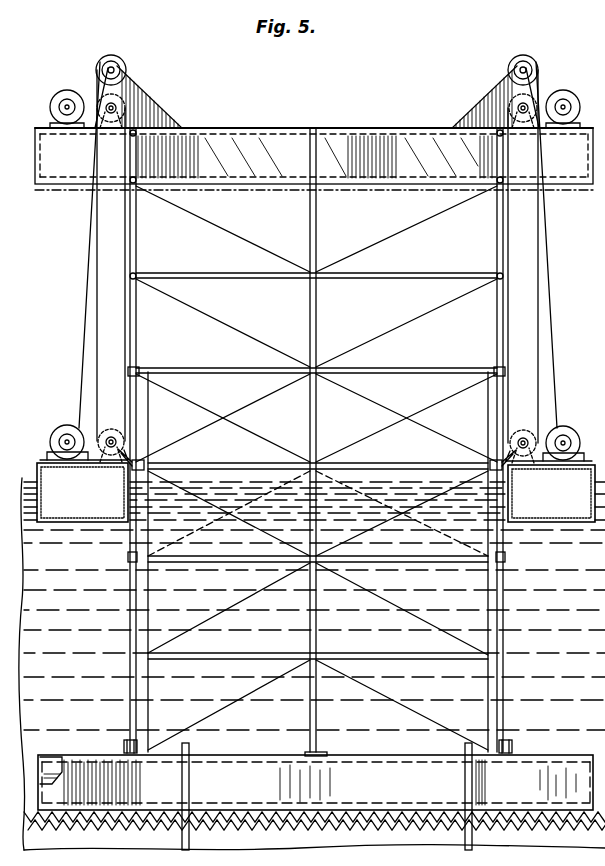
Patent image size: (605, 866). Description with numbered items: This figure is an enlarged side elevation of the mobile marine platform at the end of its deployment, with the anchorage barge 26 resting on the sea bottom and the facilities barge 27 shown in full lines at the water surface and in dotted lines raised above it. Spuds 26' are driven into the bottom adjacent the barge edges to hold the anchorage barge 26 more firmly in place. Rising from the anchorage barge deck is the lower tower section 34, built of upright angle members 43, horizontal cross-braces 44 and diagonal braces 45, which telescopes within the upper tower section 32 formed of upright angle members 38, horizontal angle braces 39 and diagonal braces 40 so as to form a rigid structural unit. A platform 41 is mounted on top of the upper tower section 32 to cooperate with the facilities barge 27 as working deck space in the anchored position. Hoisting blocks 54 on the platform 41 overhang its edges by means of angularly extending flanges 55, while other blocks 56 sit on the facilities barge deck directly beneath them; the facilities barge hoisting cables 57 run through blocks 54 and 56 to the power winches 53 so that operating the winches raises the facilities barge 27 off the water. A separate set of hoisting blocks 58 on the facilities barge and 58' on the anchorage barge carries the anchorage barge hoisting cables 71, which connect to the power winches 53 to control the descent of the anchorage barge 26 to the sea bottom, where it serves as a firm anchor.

The anchorage barge 26 is at (313, 772).
The spuds 26' is at (309, 796).
The facilities barge 27 is at (41, 191).
The upper tower section 32 is at (131, 292).
The lower tower section 34 is at (490, 601).
The upright angle members 38 is at (138, 336).
The horizontal angle braces 39 is at (179, 272).
The diagonal braces 40 is at (216, 319).
The platform 41 is at (298, 127).
The upright angle members 43 is at (137, 633).
The horizontal cross-braces 44 is at (181, 564).
The diagonal braces 45 is at (214, 621).
The power winches 53 is at (58, 94).
The hoisting blocks 54 is at (112, 57).
The angularly extending flanges 55 is at (139, 86).
The blocks 56 is at (100, 99).
The facilities barge hoisting cables 57 is at (88, 260).
The hoisting blocks 58 is at (317, 443).
The hoisting blocks 58' is at (315, 745).
The anchorage barge hoisting cables 71 is at (131, 664).